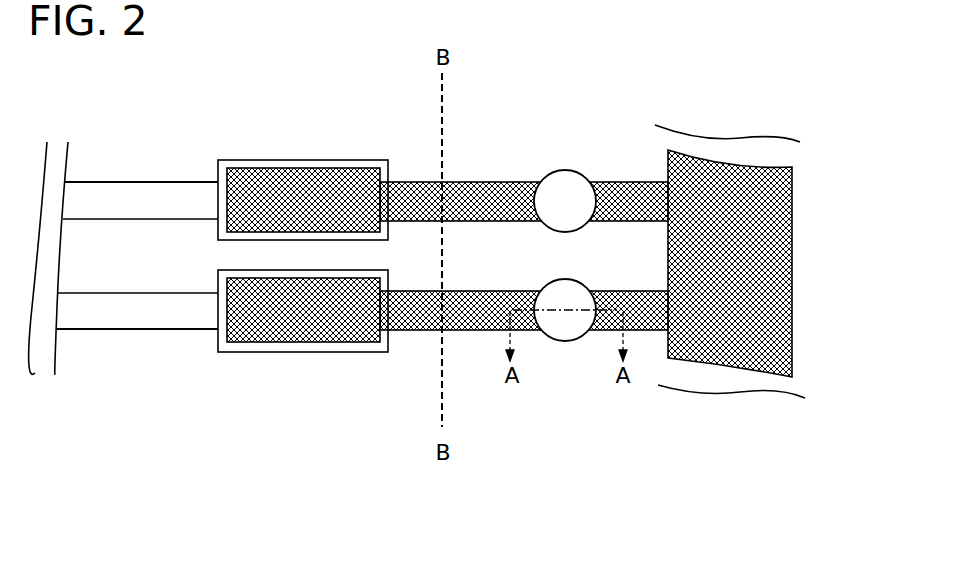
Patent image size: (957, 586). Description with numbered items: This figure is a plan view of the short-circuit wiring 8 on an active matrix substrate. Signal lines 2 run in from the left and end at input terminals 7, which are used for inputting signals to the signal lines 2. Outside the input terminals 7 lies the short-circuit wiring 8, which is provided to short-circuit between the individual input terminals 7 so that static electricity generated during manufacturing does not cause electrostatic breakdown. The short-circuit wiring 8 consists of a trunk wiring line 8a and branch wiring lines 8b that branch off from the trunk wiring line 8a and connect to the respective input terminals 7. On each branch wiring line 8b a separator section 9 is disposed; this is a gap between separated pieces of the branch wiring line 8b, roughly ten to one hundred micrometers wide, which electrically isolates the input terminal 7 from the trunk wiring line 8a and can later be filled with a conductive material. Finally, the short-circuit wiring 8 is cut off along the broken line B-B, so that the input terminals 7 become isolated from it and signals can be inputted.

The signal line 2 is at (143, 329).
The input terminal 7 is at (303, 352).
The short-circuit wiring 8 is at (616, 336).
The trunk wiring line 8a is at (754, 261).
The branch wiring line 8b is at (470, 330).
The separator section 9 is at (565, 341).